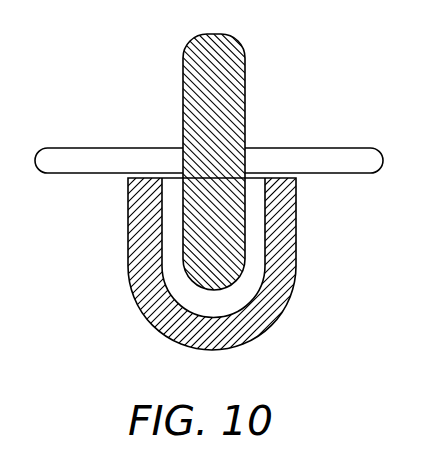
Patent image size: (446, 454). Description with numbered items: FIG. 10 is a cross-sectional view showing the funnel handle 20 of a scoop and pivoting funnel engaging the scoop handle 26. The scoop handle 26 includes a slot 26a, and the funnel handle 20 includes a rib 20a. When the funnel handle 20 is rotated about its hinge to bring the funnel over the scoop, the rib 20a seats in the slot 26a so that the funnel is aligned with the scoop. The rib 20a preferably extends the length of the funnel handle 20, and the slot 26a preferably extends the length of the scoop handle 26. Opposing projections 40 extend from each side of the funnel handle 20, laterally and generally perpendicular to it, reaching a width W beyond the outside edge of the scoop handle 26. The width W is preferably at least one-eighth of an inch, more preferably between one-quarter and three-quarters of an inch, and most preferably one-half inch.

The funnel handle 20 is at (231, 69).
The rib 20a is at (228, 228).
The scoop handle 26 is at (152, 293).
The slot 26a is at (172, 240).
The projection 40 is at (103, 163).
The width W is at (300, 196).